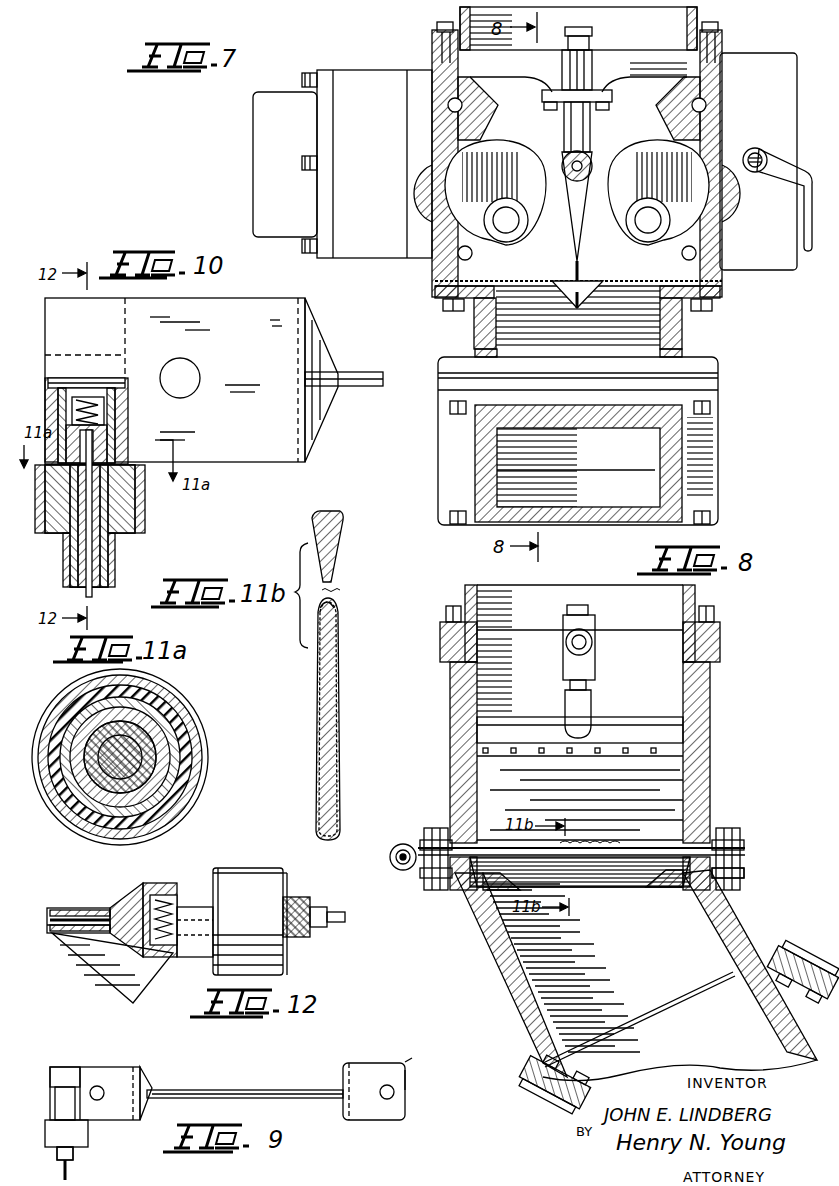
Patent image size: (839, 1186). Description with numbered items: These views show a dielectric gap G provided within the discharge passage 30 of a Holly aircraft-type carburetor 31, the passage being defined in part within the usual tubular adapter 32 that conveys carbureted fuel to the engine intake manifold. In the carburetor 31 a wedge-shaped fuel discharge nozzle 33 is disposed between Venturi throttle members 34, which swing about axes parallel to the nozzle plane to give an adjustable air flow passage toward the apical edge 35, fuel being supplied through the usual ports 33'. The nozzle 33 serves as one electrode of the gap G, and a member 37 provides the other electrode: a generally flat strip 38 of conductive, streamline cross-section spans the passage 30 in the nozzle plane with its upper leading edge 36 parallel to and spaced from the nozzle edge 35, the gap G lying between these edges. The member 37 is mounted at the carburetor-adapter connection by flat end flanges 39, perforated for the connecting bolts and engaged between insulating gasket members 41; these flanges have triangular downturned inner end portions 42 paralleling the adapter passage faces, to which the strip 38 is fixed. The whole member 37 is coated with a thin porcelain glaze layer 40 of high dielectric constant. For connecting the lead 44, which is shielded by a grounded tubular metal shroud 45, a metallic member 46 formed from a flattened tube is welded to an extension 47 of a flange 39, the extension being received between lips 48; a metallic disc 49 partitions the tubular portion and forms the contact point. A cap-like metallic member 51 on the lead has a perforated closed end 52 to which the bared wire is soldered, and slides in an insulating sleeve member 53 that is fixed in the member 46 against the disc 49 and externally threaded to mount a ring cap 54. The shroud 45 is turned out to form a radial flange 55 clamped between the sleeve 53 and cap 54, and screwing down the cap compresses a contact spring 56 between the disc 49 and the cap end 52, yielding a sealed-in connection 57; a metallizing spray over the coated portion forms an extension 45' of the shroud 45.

In FIG. 7, the discharge passage 30 is at (616, 294).
In FIG. 8, the discharge passage 30 is at (456, 810).
In FIG. 7, the carburetor 31 is at (423, 60).
In FIG. 8, the carburetor 31 is at (726, 606).
In FIG. 7, the tubular adapter 32 is at (470, 332).
In FIG. 8, the tubular adapter 32 is at (735, 912).
In FIG. 7, the fuel discharge nozzle 33 is at (589, 226).
In FIG. 8, the fuel discharge nozzle 33 is at (586, 800).
In FIG. 11b, the fuel discharge nozzle 33 is at (343, 546).
In FIG. 7, the ports 33' is at (594, 177).
In FIG. 8, the ports 33' is at (547, 752).
In FIG. 8, the Venturi throttle members 34 is at (635, 720).
In FIG. 8, the apical edge 35 is at (640, 843).
In FIG. 11b, the apical edge 35 is at (332, 580).
In FIG. 8, the upper edge 36 is at (508, 845).
In FIG. 11b, the upper edge 36 is at (336, 604).
In FIG. 9, the upper edge 36 is at (228, 1087).
In FIG. 7, the electrode member 37 is at (566, 306).
In FIG. 9, the electrode member 37 is at (426, 1060).
In FIG. 7, the flat strip 38 is at (585, 296).
In FIG. 8, the flat strip 38 is at (584, 878).
In FIG. 10, the flat strip 38 is at (354, 387).
In FIG. 11b, the flat strip 38 is at (340, 698).
In FIG. 9, the flat strip 38 is at (268, 1088).
In FIG. 8, the end flanges 39 is at (745, 855).
In FIG. 10, the end flanges 39 is at (265, 429).
In FIG. 11b, the insulating coating 40 is at (340, 666).
In FIG. 11a, the insulating coating 40 is at (185, 703).
In FIG. 12, the insulating coating 40 is at (245, 868).
In FIG. 7, the gasket members 41 is at (723, 282).
In FIG. 10, the inner end portions 42 is at (318, 342).
In FIG. 12, the inner end portions 42 is at (105, 970).
In FIG. 9, the inner end portions 42 is at (150, 1086).
In FIG. 10, the lead 44 is at (92, 590).
In FIG. 11a, the lead 44 is at (206, 782).
In FIG. 12, the lead 44 is at (340, 915).
In FIG. 9, the lead 44 is at (68, 1172).
In FIG. 10, the shielding shroud 45 is at (67, 528).
In FIG. 12, the shielding shroud 45 is at (305, 900).
In FIG. 10, the shroud extension 45' is at (69, 526).
In FIG. 11a, the shroud extension 45' is at (137, 754).
In FIG. 12, the shroud extension 45' is at (298, 907).
In FIG. 8, the metallic member 46 is at (398, 845).
In FIG. 10, the metallic member 46 is at (128, 390).
In FIG. 11a, the metallic member 46 is at (190, 720).
In FIG. 12, the metallic member 46 is at (160, 884).
In FIG. 9, the metallic member 46 is at (50, 1112).
In FIG. 10, the flange extension 47 is at (97, 340).
In FIG. 12, the flange extension 47 is at (40, 920).
In FIG. 9, the lips 48 is at (66, 1067).
In FIG. 10, the metallic disc 49 is at (52, 388).
In FIG. 12, the metallic disc 49 is at (140, 890).
In FIG. 10, the cap-like metallic member 51 is at (128, 437).
In FIG. 11a, the cap-like metallic member 51 is at (205, 758).
In FIG. 10, the closed end 52 is at (118, 432).
In FIG. 10, the sleeve member 53 is at (118, 405).
In FIG. 11a, the sleeve member 53 is at (193, 738).
In FIG. 10, the ring cap 54 is at (128, 532).
In FIG. 12, the ring cap 54 is at (258, 905).
In FIG. 10, the radial flange 55 is at (130, 516).
In FIG. 10, the compression contact spring 56 is at (60, 408).
In FIG. 12, the compression contact spring 56 is at (165, 945).
In FIG. 9, the sealed-in connection 57 is at (97, 1138).
In FIG. 7, the dielectric gap G is at (564, 271).
In FIG. 8, the dielectric gap G is at (590, 842).
In FIG. 11b, the dielectric gap G is at (342, 591).